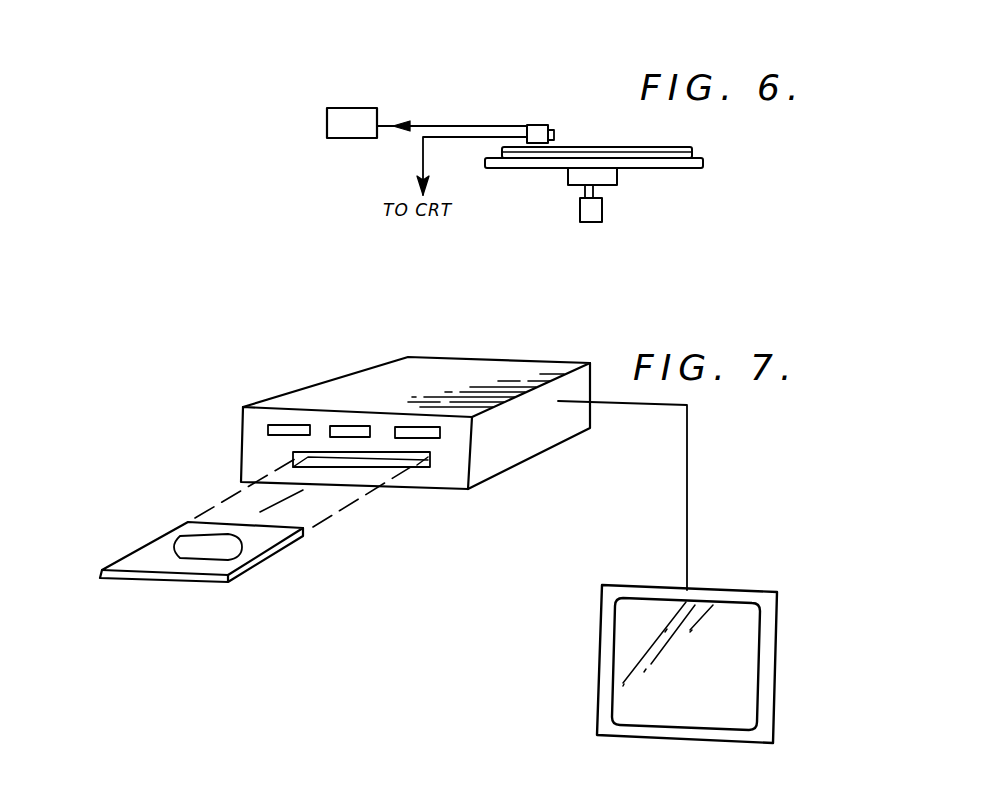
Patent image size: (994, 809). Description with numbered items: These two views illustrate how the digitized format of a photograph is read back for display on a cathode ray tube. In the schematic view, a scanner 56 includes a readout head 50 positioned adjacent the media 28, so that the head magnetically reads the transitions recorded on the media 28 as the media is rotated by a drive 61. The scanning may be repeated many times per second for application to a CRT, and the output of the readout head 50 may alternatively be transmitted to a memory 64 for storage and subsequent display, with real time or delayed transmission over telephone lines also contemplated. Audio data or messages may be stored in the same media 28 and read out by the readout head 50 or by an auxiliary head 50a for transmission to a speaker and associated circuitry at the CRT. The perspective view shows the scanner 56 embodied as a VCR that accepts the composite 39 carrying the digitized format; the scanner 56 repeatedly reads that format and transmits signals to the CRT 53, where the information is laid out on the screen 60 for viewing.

In FIG. 6, the media 28 is at (672, 148).
In FIG. 7, the composite 39 is at (173, 596).
In FIG. 6, the readout head 50 is at (533, 125).
In FIG. 6, the auxiliary head 50a is at (553, 135).
In FIG. 7, the CRT 53 is at (651, 663).
In FIG. 6, the scanner 56 is at (667, 179).
In FIG. 7, the scanner 56 is at (295, 382).
In FIG. 7, the screen 60 is at (726, 665).
In FIG. 6, the drive 61 is at (602, 210).
In FIG. 6, the memory 64 is at (327, 123).